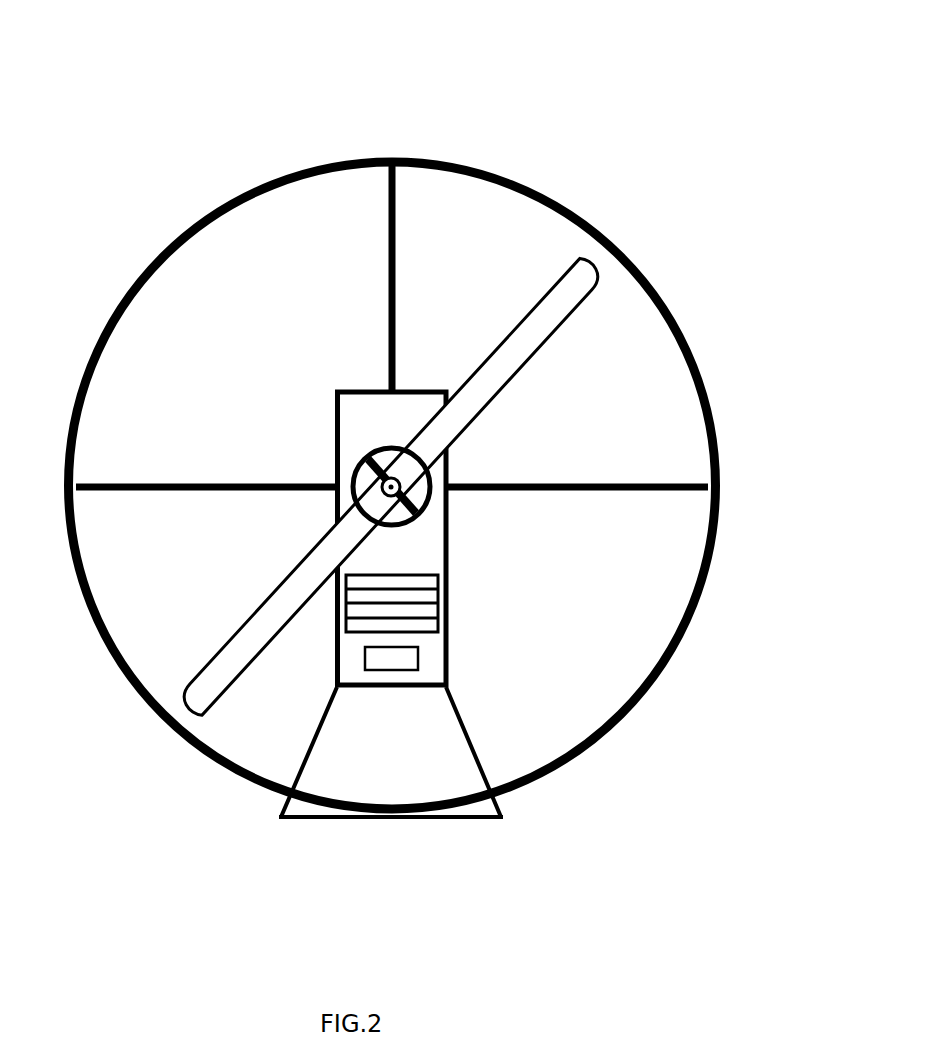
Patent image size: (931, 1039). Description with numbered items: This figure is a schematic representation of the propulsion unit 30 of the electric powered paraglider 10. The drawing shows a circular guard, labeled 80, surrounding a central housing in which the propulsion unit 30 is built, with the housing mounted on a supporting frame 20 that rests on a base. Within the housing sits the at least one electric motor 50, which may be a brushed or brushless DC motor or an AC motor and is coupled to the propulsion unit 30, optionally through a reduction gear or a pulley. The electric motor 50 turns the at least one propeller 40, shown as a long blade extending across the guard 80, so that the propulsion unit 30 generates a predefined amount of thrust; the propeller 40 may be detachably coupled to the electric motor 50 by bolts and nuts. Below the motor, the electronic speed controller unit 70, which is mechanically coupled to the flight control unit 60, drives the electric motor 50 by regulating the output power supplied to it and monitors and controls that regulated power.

The electric powered paraglider 10 is at (388, 105).
The frame 20 is at (470, 737).
The propulsion unit 30 is at (450, 552).
The propeller 40 is at (582, 272).
The electric motor 50 is at (450, 484).
The flight control unit 60 is at (420, 667).
The electronic speed controller unit 70 is at (442, 613).
The circular frame ring 80 is at (702, 385).